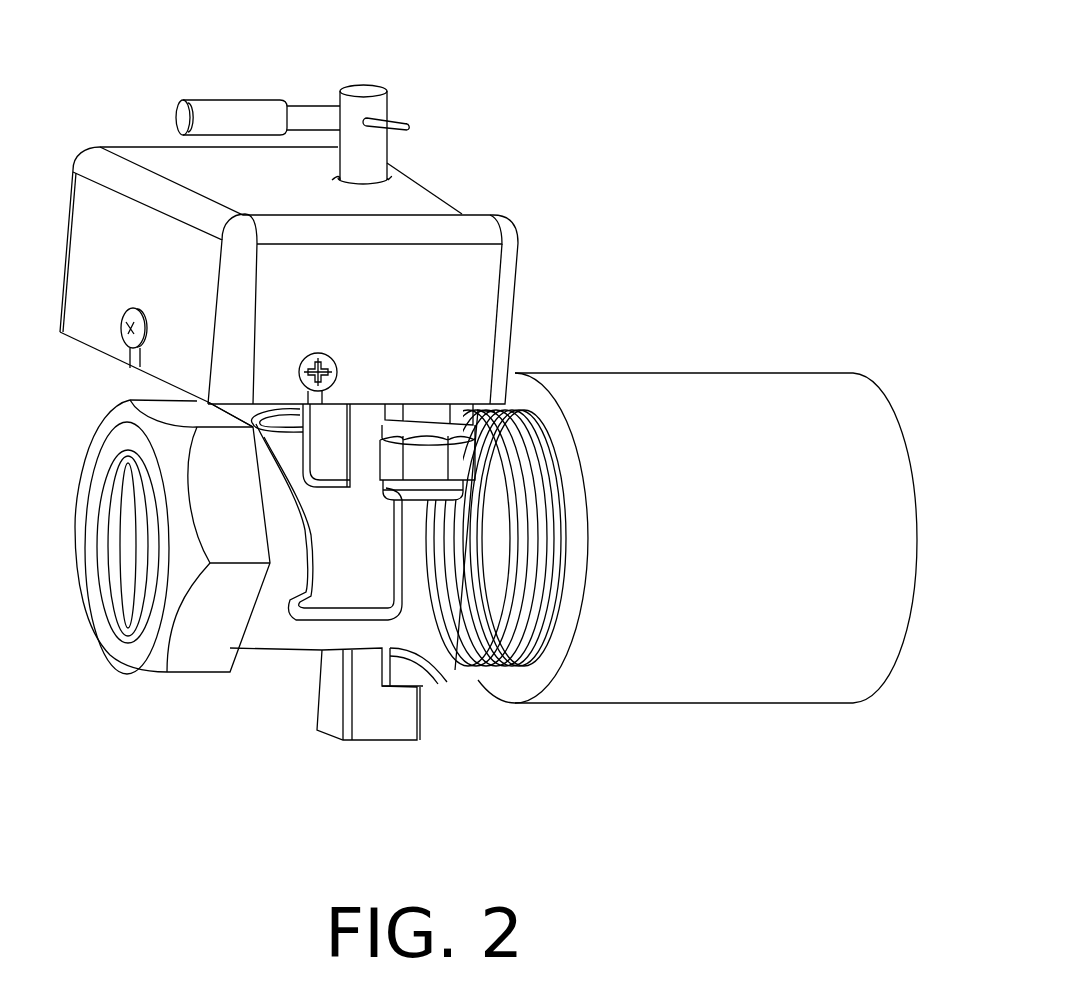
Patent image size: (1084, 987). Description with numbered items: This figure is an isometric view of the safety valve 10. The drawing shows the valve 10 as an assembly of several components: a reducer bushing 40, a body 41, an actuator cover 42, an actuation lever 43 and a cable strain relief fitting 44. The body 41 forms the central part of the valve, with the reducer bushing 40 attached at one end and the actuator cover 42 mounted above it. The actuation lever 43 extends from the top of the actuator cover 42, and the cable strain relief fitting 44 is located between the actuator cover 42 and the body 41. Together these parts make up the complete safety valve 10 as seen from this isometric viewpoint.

The valve 10 is at (505, 85).
The reducer bushing 40 is at (702, 400).
The body 41 is at (212, 648).
The actuator cover 42 is at (460, 213).
The actuation lever 43 is at (222, 112).
The cable strain relief fitting 44 is at (420, 458).